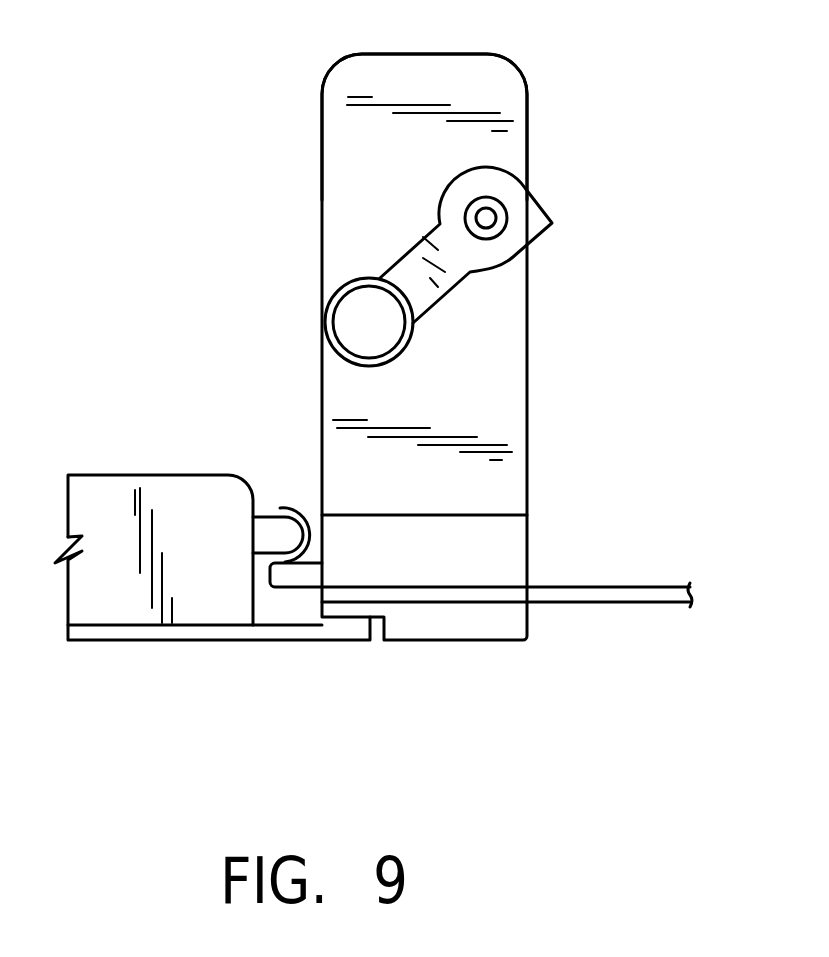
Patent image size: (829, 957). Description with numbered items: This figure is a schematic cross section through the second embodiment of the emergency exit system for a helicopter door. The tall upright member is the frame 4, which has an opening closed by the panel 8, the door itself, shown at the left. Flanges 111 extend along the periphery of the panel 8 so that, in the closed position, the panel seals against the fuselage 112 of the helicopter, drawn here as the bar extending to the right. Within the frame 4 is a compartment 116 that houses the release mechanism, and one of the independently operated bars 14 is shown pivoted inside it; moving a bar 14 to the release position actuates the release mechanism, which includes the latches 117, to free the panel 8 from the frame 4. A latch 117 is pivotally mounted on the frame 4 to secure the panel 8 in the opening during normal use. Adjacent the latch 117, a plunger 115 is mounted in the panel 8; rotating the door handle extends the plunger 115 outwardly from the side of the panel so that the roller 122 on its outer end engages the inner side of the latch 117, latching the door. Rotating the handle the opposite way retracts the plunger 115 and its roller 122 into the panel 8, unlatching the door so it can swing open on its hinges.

The frame 4 is at (457, 533).
The panel 8 is at (147, 475).
The bar 14 is at (360, 313).
The flange 111 is at (323, 642).
The fuselage 112 is at (618, 606).
The plunger 115 is at (266, 513).
The compartment 116 is at (513, 100).
The latch 117 is at (298, 578).
The roller 122 is at (300, 507).